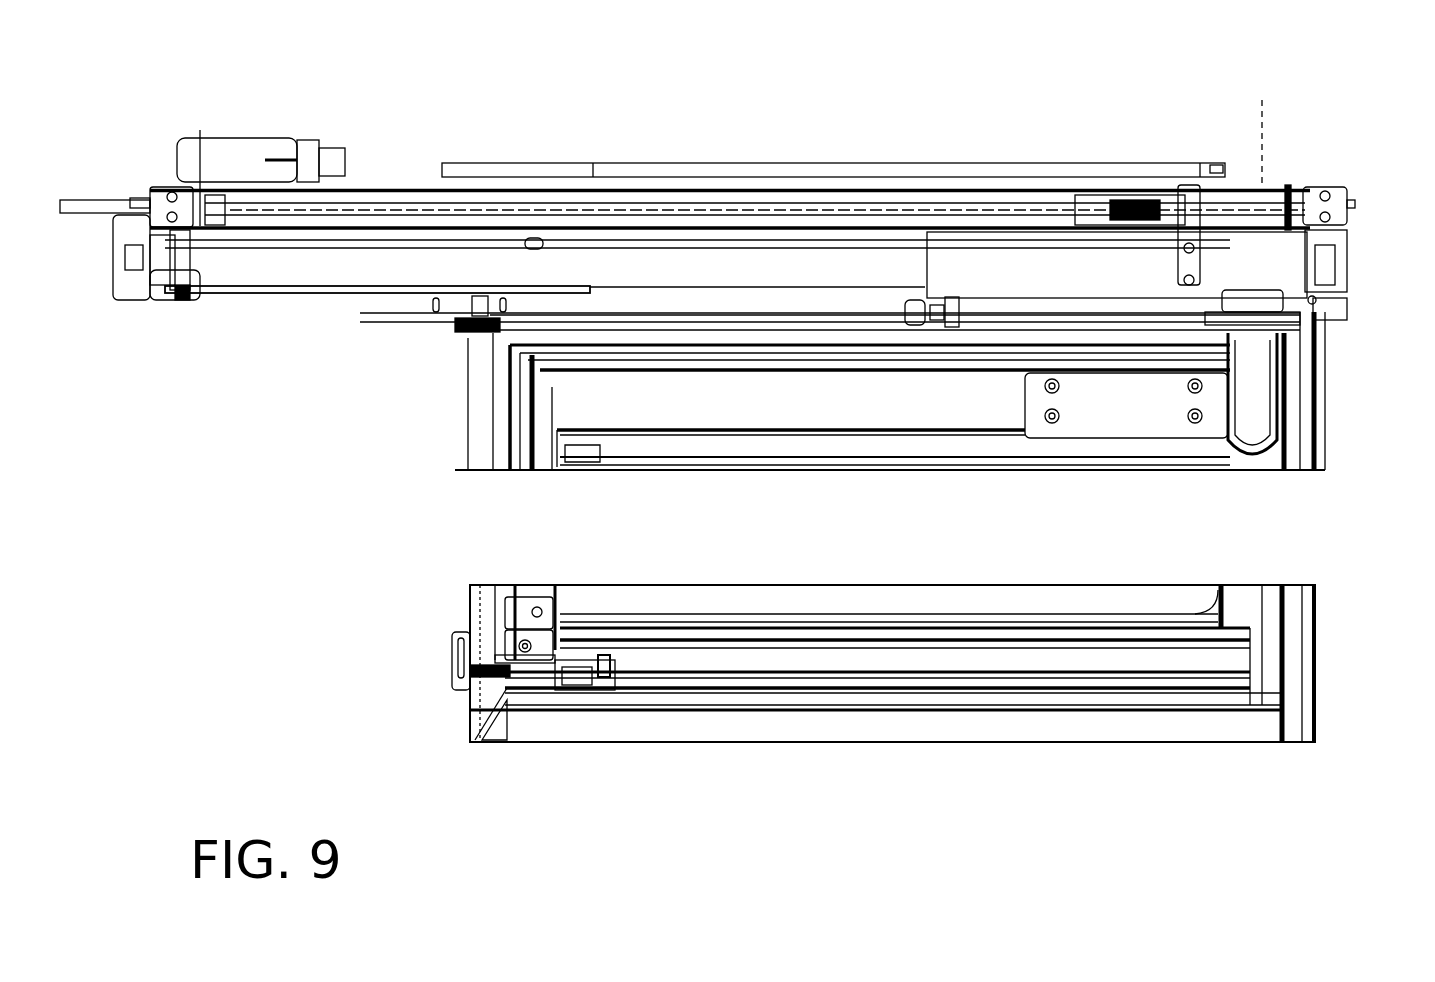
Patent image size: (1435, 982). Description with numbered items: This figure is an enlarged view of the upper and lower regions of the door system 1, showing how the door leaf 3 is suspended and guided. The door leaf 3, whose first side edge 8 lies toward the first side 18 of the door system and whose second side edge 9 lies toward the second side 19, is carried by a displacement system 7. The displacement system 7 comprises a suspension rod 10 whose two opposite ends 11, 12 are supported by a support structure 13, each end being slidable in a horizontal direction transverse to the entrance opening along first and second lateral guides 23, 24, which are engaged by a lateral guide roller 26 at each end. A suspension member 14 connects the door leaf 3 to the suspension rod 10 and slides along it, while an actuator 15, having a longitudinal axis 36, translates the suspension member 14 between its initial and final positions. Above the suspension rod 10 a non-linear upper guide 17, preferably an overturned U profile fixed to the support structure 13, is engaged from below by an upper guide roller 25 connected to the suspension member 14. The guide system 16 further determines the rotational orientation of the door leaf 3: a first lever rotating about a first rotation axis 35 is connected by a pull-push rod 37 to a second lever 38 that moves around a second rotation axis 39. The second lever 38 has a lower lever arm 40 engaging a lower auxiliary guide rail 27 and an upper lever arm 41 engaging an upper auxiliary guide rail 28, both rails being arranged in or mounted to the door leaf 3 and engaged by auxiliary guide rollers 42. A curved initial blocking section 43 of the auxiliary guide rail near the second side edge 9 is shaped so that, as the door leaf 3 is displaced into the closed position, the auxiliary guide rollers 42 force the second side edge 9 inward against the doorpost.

The door system 1 is at (295, 443).
The door leaf 3 is at (610, 590).
The displacement system 7 is at (935, 197).
The first side edge 8 is at (1300, 420).
The second side edge 9 is at (465, 437).
The suspension rod 10 is at (325, 275).
The first end of suspension rod 11 is at (1345, 235).
The second end of suspension rod 12 is at (150, 245).
The support structure 13 is at (115, 300).
The suspension member 14 is at (990, 255).
The actuator 15 is at (895, 205).
The guide system 16 is at (740, 163).
The upper guide 17 is at (835, 163).
The first side 18 is at (1395, 540).
The second side 19 is at (330, 534).
The first lateral guide 23 is at (1345, 275).
The second lateral guide 24 is at (148, 310).
The upper guide roller 25 is at (1188, 195).
The lateral guide roller 26 is at (175, 315).
The lower auxiliary guide rail 27 is at (940, 660).
The upper auxiliary guide rail 28 is at (860, 435).
The first rotation axis 35 is at (1262, 110).
The longitudinal axis of the actuator 36 is at (495, 205).
The pull-push rod 37 is at (625, 320).
The second lever 38 is at (510, 468).
The second rotation axis 39 is at (480, 745).
The lower lever arm 40 is at (470, 715).
The upper lever arm 41 is at (530, 468).
The auxiliary guide roller 42 is at (600, 455).
The curved initial blocking section 43 is at (620, 660).